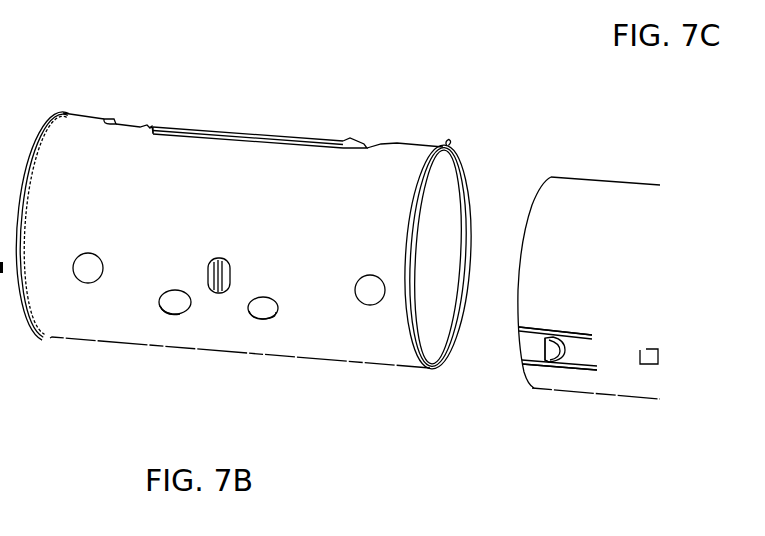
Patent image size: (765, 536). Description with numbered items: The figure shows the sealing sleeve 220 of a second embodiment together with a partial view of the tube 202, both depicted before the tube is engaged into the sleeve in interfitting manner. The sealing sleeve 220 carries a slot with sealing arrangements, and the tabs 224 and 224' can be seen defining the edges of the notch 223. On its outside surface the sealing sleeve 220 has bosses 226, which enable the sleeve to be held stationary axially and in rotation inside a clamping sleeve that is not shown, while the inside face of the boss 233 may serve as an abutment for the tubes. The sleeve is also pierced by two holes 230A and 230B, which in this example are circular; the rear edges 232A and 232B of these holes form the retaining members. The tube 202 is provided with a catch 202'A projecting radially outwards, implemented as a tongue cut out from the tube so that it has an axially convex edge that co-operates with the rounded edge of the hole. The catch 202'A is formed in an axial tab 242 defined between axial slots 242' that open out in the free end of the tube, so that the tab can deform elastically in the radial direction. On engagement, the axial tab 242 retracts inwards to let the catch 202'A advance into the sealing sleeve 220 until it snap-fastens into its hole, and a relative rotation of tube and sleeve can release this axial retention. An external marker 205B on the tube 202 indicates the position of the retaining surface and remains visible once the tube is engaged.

In FIG. 7B, the sealing sleeve 220 is at (62, 141).
In FIG. 7B, the notch 223 is at (270, 138).
In FIG. 7B, the tab 224 is at (156, 106).
In FIG. 7B, the tab 224' is at (393, 120).
In FIG. 7B, the boss 226 is at (88, 268).
In FIG. 7B, the boss 233 is at (218, 259).
In FIG. 7B, the hole 230A is at (175, 300).
In FIG. 7B, the rear edge 232A is at (166, 307).
In FIG. 7B, the hole 230B is at (266, 306).
In FIG. 7B, the rear edge 232B is at (275, 318).
In FIG. 7C, the tube 202 is at (589, 271).
In FIG. 7C, the axial tab 242 is at (531, 348).
In FIG. 7C, the axial slot 242' is at (564, 356).
In FIG. 7C, the catch 202'A is at (512, 375).
In FIG. 7C, the marker 205B is at (652, 365).